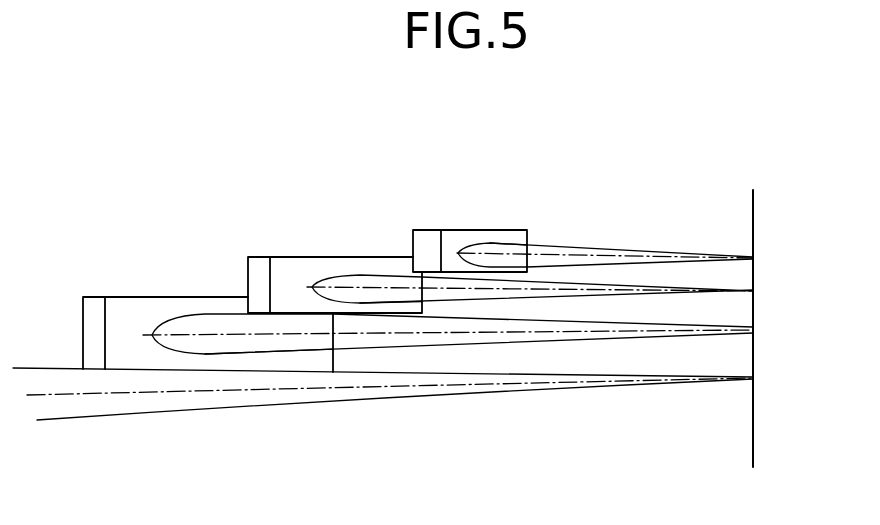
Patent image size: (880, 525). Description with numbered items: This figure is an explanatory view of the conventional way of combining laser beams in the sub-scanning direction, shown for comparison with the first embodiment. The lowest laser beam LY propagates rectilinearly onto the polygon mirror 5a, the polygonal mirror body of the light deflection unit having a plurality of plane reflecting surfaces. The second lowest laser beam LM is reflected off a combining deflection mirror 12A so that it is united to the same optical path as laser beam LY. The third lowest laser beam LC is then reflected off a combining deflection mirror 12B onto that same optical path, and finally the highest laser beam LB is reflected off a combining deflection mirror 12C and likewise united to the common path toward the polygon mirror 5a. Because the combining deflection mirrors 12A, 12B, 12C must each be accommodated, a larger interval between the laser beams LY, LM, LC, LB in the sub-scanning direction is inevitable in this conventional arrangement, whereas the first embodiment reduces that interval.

The polygon mirror 5a is at (757, 215).
The combining deflection mirror 12A is at (132, 297).
The combining deflection mirror 12B is at (305, 257).
The combining deflection mirror 12C is at (452, 230).
The laser beam LC is at (563, 265).
The laser beam LB is at (657, 248).
The laser beam LM is at (543, 341).
The laser beam LY is at (673, 383).